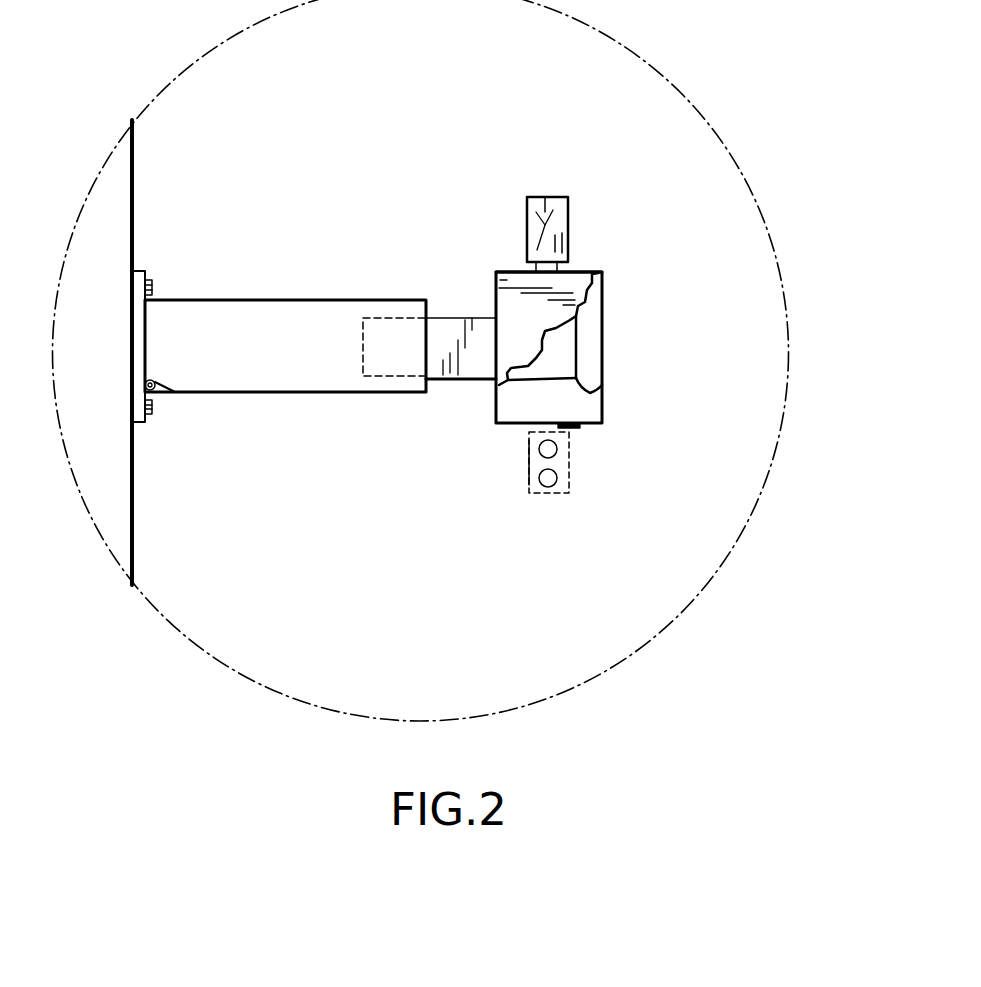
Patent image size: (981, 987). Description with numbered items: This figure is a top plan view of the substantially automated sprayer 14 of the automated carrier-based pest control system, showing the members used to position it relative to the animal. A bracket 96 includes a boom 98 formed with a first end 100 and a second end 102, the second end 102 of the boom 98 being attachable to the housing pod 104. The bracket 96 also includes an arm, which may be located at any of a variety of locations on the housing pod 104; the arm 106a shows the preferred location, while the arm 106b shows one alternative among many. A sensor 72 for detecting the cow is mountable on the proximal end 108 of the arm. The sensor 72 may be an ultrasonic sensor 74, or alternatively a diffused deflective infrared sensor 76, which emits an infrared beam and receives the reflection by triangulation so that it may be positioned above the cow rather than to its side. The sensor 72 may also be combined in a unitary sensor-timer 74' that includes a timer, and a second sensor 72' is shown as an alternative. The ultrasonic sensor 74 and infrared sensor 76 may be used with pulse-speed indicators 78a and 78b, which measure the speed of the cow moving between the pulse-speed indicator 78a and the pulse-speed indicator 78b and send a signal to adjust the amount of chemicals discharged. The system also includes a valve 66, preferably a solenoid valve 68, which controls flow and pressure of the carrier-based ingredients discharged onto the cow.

The substantially automated sprayer 14 is at (693, 108).
The bracket 96 is at (262, 382).
The boom 98 is at (435, 395).
The first end 100 is at (365, 335).
The second end 102 is at (168, 395).
The housing pod 104 is at (602, 290).
The arm 106a is at (570, 268).
The arm 106b is at (580, 425).
The proximal end 108 is at (527, 265).
The valve 66 is at (600, 343).
The solenoid valve 68 is at (601, 390).
The sensor 72 is at (591, 229).
The ultrasonic sensor 74 is at (541, 184).
The diffused deflective infrared sensor 76 is at (568, 240).
The pulse-speed indicator 78b is at (545, 197).
The second sensor 72' is at (585, 463).
The sensor-timer 74' is at (489, 462).
The pulse-speed indicator 78a is at (548, 478).